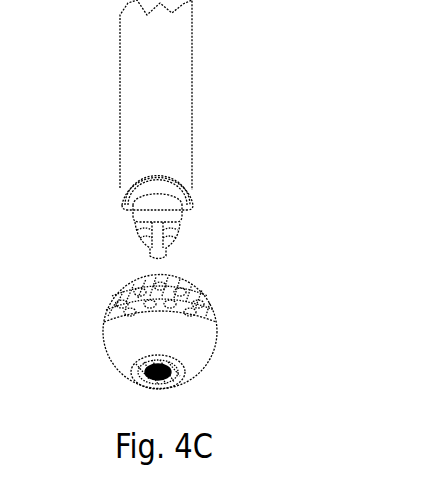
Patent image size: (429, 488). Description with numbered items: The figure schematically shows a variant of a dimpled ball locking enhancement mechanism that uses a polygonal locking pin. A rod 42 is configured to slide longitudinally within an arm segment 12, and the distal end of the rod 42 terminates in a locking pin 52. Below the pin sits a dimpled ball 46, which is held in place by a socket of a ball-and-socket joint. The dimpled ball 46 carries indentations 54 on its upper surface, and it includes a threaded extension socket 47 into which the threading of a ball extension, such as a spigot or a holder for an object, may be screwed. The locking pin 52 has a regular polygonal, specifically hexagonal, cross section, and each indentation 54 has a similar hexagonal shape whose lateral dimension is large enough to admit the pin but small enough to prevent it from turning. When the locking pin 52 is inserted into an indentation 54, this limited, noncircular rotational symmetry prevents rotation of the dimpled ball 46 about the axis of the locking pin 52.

The arm segment 12 is at (187, 133).
The rod 42 is at (140, 215).
The locking pin 52 is at (150, 250).
The dimpled ball 46 is at (123, 337).
The indentation 54 is at (160, 282).
The threaded extension socket 47 is at (163, 367).